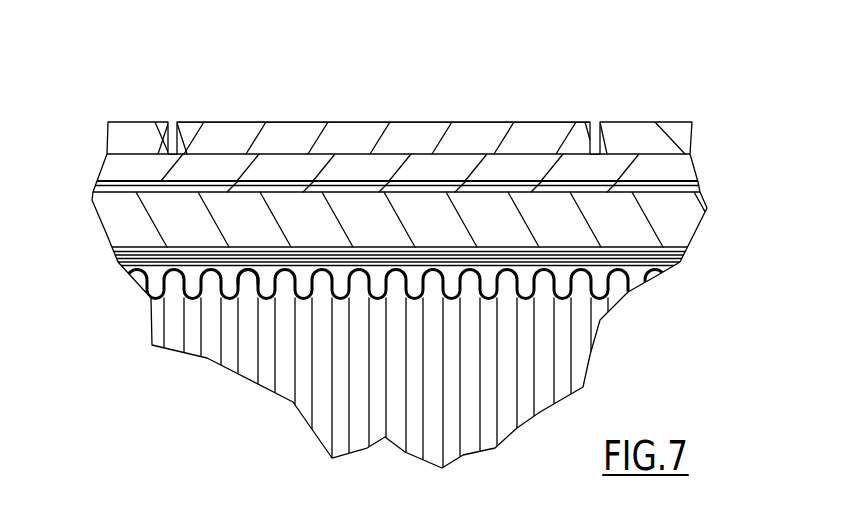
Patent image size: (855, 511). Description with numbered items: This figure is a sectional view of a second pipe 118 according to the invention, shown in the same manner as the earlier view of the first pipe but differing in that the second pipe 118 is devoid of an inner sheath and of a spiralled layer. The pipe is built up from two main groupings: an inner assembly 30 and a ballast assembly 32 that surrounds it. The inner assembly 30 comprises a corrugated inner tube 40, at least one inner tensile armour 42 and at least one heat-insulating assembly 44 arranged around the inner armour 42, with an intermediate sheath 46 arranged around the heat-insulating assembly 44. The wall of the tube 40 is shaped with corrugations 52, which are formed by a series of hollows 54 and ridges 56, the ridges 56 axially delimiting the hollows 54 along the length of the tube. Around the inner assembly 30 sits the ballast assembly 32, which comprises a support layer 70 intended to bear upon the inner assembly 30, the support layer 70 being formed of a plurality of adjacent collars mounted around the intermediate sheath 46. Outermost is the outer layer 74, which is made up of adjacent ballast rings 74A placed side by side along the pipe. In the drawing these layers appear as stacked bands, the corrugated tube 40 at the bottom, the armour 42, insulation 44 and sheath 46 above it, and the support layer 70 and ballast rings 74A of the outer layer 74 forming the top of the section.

The second pipe 118 is at (666, 66).
The outer layer 74 is at (509, 104).
The ballast rings 74A is at (303, 131).
The support layer 70 is at (82, 186).
The intermediate sheath 46 is at (112, 200).
The heat-insulating assembly 44 is at (90, 246).
The inner tensile armour 42 is at (104, 267).
The corrugated inner tube 40 is at (353, 374).
The hollows 54 is at (192, 302).
The corrugations 52 is at (210, 298).
The ridges 56 is at (247, 268).
The ballast assembly 32 is at (419, 95).
The inner assembly 30 is at (717, 188).